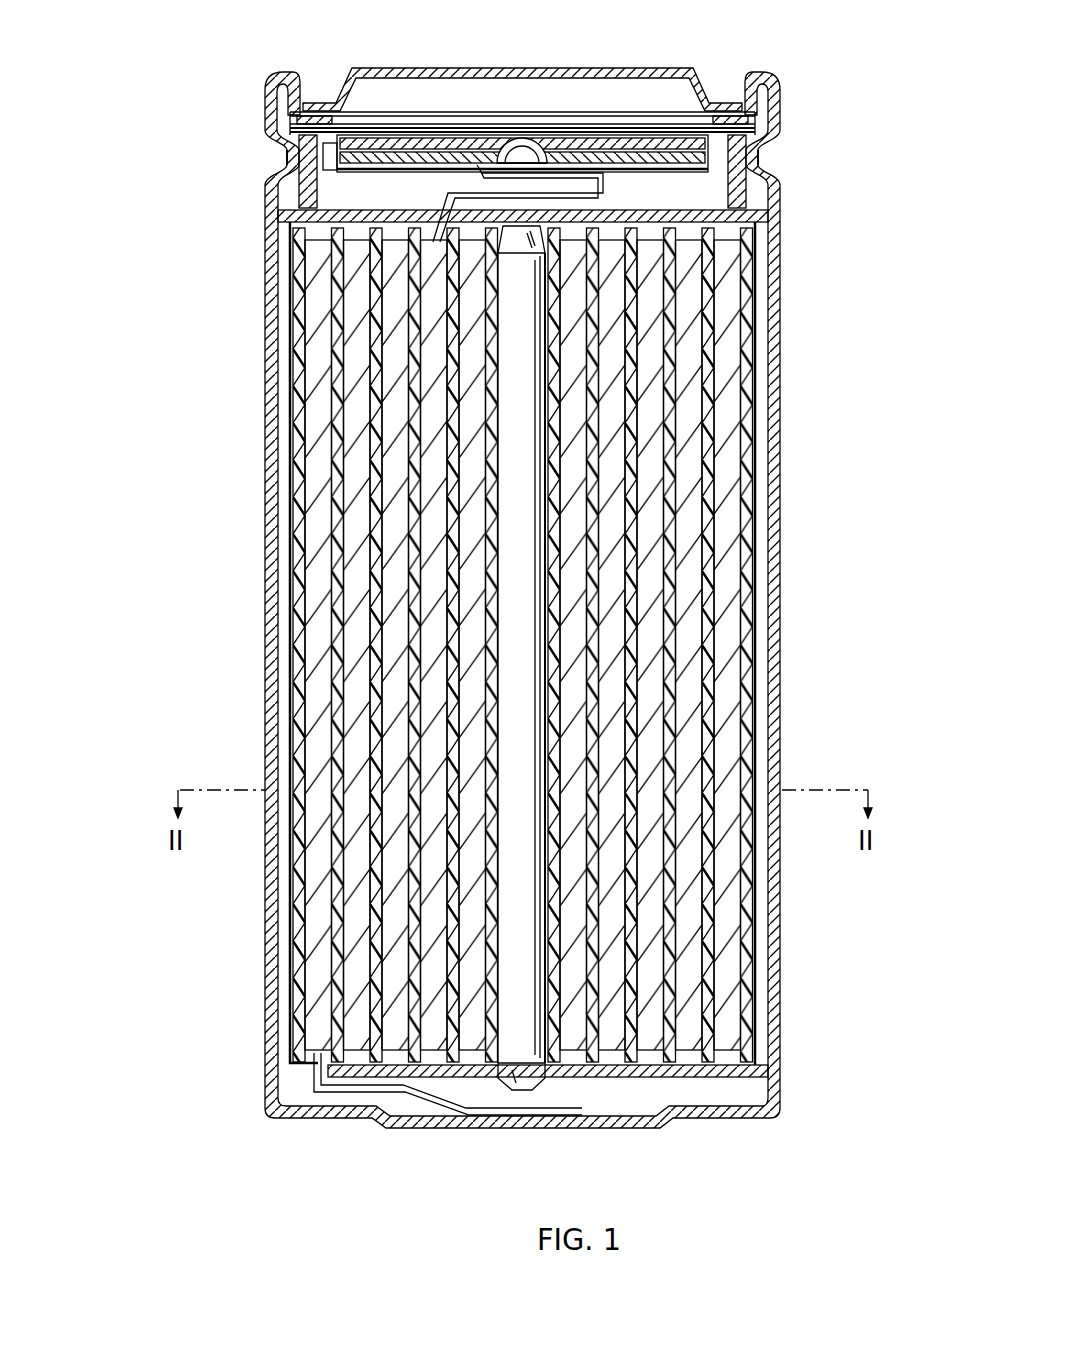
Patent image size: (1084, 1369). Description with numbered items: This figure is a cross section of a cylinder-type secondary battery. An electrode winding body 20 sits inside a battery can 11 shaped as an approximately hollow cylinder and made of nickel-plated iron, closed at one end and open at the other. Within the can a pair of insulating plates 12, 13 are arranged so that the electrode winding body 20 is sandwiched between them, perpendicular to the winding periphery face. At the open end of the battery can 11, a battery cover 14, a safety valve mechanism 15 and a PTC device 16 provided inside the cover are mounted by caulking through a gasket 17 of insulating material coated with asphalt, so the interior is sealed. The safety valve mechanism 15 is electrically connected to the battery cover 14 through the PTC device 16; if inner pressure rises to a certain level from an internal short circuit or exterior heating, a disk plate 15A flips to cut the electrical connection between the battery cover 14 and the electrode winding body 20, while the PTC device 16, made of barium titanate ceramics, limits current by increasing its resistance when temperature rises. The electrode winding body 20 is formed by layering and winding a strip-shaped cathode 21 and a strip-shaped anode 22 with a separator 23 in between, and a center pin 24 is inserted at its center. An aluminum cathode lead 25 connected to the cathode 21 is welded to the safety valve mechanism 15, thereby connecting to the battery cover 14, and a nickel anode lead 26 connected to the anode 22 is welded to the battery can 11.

The battery can 11 is at (778, 277).
The insulating plate 12 is at (765, 217).
The insulating plate 13 is at (770, 1072).
The battery cover 14 is at (490, 68).
The safety valve mechanism 15 is at (645, 131).
The disk plate 15A is at (603, 110).
The PTC device 16 is at (762, 117).
The gasket 17 is at (762, 178).
The electrode winding body 20 is at (757, 398).
The cathode 21 is at (690, 482).
The anode 22 is at (727, 542).
The separator 23 is at (708, 612).
The center pin 24 is at (515, 662).
The cathode lead 25 is at (495, 152).
The anode lead 26 is at (417, 1103).